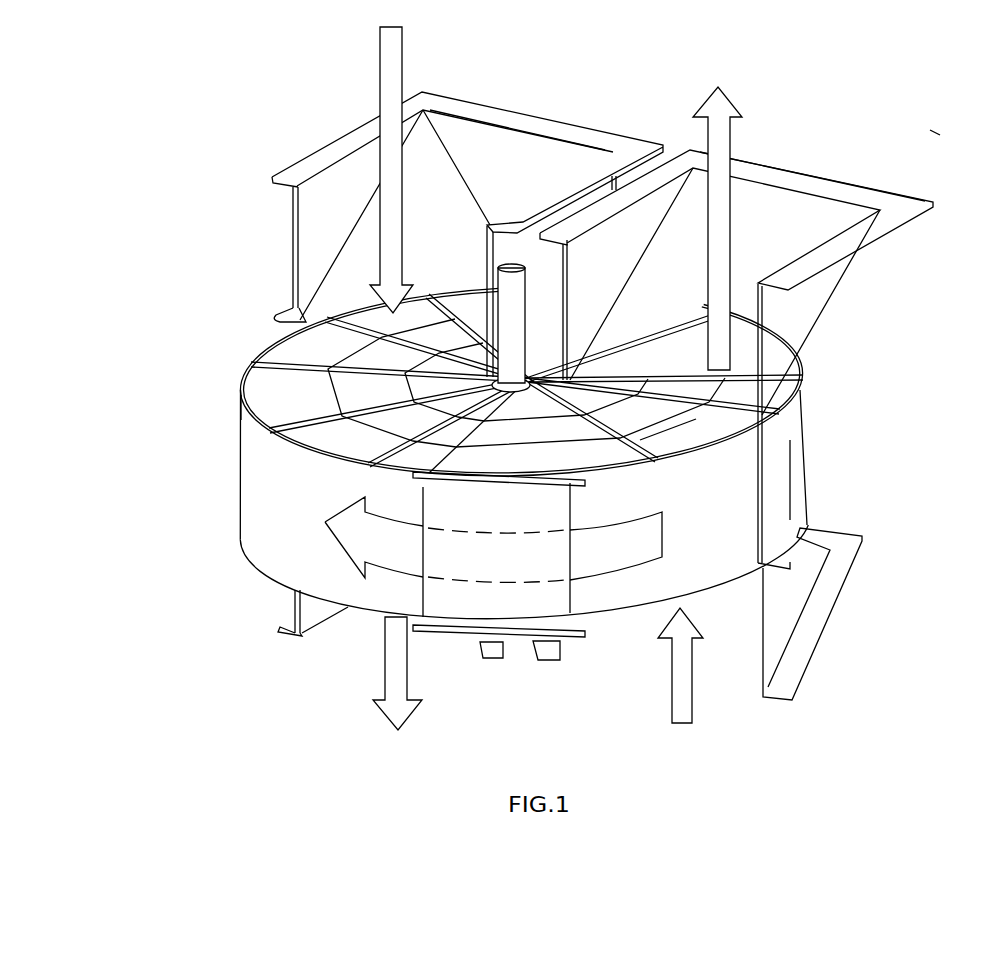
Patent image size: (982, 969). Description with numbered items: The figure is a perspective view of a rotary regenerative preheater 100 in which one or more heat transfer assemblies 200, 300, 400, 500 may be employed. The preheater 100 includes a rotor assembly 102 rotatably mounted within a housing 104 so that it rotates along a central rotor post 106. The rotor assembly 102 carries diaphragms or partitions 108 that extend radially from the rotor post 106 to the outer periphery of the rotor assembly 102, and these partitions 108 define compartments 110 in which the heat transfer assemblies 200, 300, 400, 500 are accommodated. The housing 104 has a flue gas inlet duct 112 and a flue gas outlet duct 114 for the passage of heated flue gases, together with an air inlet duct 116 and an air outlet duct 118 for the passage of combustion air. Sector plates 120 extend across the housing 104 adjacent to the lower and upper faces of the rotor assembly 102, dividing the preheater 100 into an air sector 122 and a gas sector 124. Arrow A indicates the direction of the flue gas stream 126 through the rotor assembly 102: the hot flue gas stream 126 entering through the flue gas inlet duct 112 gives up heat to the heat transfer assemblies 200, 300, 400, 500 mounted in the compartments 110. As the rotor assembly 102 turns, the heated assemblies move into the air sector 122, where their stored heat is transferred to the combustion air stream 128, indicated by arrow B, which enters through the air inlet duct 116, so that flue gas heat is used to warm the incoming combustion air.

The rotary regenerative preheater 100 is at (830, 88).
The rotor assembly 102 is at (748, 480).
The housing 104 is at (775, 500).
The rotor post 106 is at (521, 266).
The partitions 108 is at (277, 413).
The compartments 110 is at (682, 440).
The flue gas inlet duct 112 is at (457, 230).
The flue gas outlet duct 114 is at (290, 637).
The air inlet duct 116 is at (815, 655).
The air outlet duct 118 is at (903, 230).
The sector plates 120 is at (494, 468).
The air sector 122 is at (748, 359).
The gas sector 124 is at (485, 143).
The flue gas stream 126 is at (382, 62).
The combustion air stream 128 is at (730, 140).
The heat transfer assembly 200 is at (469, 383).
The heat transfer assembly 300 is at (469, 383).
The heat transfer assembly 400 is at (469, 383).
The heat transfer assembly 500 is at (320, 352).